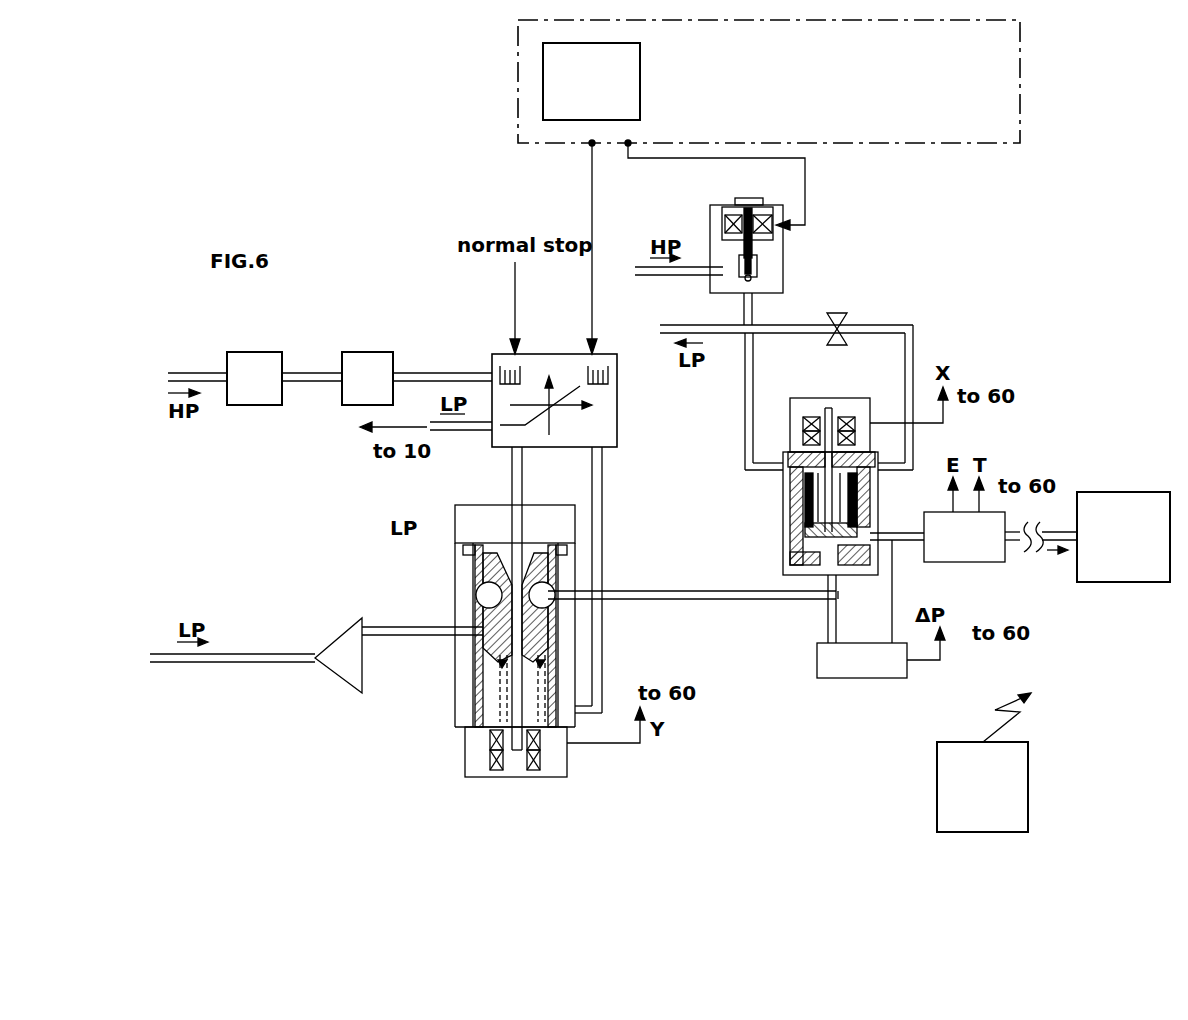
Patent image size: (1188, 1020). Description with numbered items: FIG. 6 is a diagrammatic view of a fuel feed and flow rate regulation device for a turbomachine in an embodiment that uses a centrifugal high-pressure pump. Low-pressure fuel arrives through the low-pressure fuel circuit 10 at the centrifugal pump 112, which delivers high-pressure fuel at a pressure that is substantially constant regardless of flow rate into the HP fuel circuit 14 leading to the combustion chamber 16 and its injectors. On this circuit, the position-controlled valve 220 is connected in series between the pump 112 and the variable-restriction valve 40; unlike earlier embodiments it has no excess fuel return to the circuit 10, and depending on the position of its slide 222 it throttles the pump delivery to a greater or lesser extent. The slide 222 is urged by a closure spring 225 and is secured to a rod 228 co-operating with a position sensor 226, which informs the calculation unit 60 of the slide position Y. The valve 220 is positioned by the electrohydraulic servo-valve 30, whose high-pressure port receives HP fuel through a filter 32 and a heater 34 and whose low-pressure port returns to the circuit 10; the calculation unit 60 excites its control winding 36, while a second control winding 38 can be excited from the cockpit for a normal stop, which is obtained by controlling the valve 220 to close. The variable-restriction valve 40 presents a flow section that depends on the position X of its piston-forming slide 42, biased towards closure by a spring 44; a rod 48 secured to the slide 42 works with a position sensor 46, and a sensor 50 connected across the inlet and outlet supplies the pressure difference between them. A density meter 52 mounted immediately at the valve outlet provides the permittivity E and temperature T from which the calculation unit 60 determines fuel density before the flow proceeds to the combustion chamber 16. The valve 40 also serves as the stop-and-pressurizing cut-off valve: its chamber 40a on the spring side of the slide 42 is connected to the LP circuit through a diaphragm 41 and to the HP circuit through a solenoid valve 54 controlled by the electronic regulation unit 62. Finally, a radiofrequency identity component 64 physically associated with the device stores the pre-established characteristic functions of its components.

The low-pressure fuel circuit 10 is at (186, 663).
The HP fuel circuit 14 is at (718, 612).
The combustion chamber 16 is at (1134, 551).
The electrohydraulic servo-valve 30 is at (617, 432).
The filter 32 is at (266, 392).
The heater 34 is at (379, 392).
The control winding 36 is at (607, 373).
The control winding 38 is at (495, 365).
The variable-restriction valve 40 is at (776, 573).
The chamber 40a is at (845, 492).
The diaphragm 41 is at (842, 316).
The slide 42 is at (797, 547).
The spring 44 is at (805, 520).
The position sensor 46 is at (786, 405).
The rod 48 is at (790, 490).
The sensor 50 is at (874, 674).
The density meter 52 is at (976, 551).
The solenoid valve 54 is at (783, 256).
The calculation unit 60 is at (603, 89).
The electronic regulation unit 62 is at (842, 89).
The radiofrequency identity component 64 is at (994, 801).
The centrifugal pump 112 is at (332, 648).
The position-controlled valve 220 is at (432, 720).
The slide 222 is at (556, 600).
The closure spring 225 is at (550, 658).
The position sensor 226 is at (490, 760).
The rod 228 is at (512, 690).